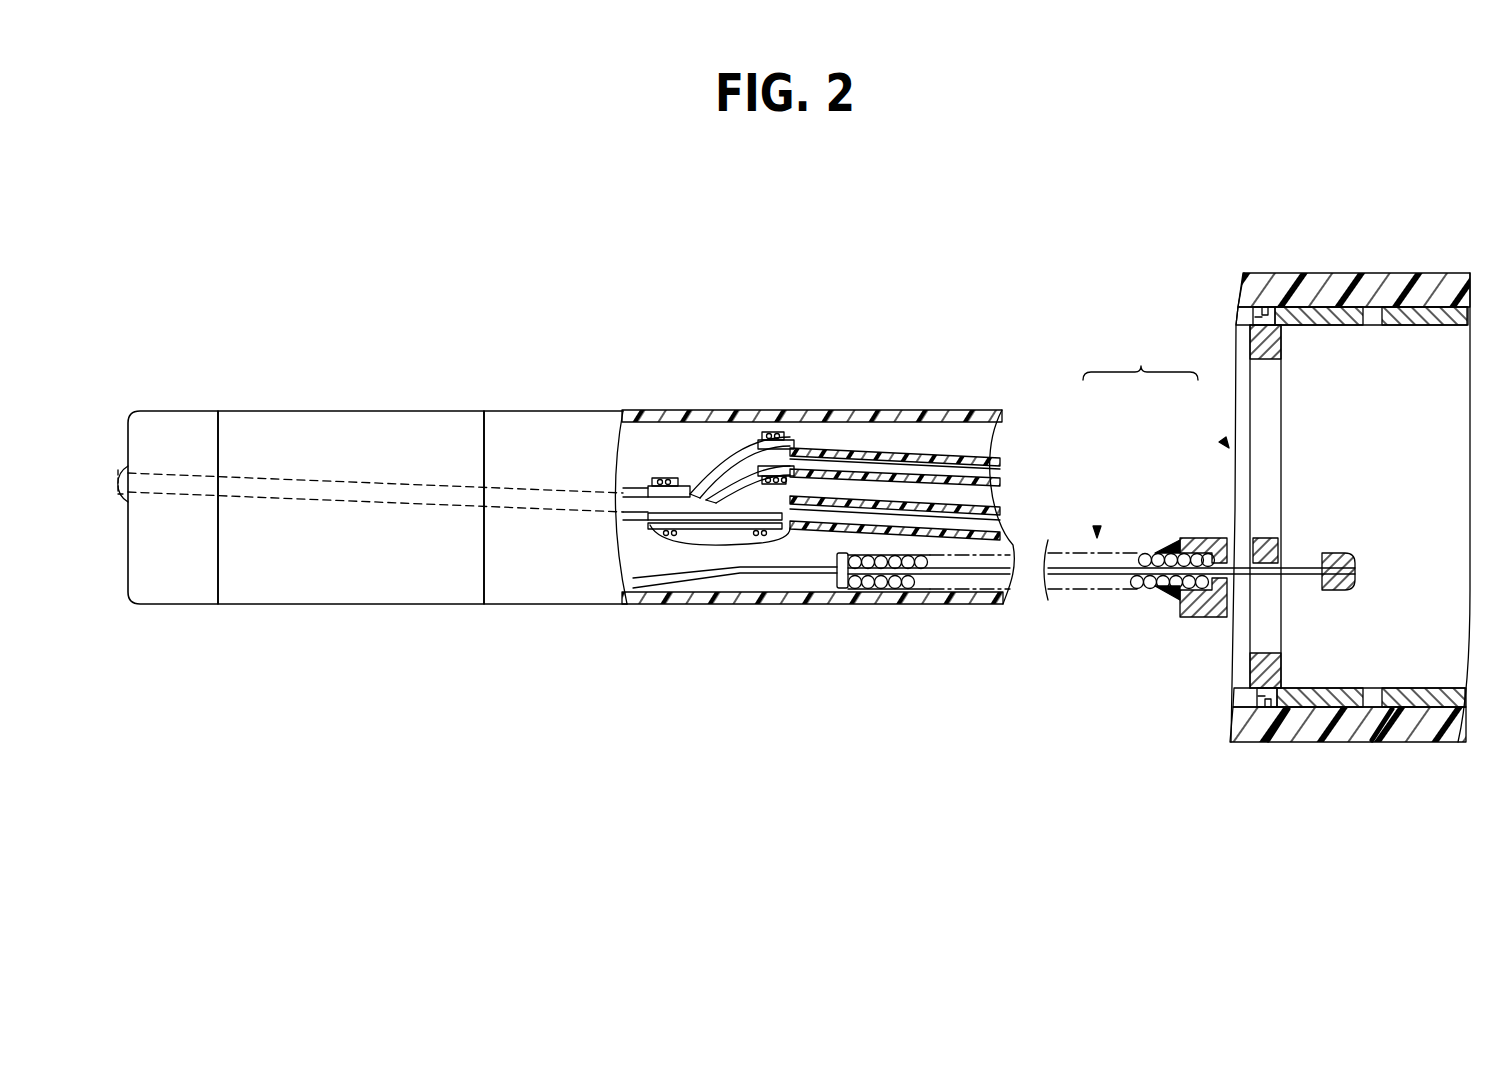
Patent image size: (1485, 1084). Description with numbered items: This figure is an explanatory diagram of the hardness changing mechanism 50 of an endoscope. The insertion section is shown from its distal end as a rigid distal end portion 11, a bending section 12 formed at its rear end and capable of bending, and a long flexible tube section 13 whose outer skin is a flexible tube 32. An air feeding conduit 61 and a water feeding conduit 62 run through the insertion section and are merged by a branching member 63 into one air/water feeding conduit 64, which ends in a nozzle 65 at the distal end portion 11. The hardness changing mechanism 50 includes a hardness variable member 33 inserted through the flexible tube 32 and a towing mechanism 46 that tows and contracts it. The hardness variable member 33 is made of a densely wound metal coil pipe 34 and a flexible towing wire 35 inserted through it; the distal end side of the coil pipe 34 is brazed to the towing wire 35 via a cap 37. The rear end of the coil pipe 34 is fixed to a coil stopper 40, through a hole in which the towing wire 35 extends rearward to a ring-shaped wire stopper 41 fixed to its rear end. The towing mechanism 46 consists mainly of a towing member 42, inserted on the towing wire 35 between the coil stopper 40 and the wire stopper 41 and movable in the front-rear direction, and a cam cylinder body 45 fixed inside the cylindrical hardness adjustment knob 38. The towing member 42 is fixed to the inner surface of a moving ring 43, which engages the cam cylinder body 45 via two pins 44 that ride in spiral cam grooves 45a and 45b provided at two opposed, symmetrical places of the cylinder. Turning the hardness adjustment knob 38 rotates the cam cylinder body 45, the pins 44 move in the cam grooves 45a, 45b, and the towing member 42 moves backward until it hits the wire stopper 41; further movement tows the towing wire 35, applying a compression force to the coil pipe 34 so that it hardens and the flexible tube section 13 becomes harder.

The distal end portion 11 is at (178, 411).
The bending section 12 is at (325, 411).
The flexible tube section 13 is at (530, 411).
The nozzle 65 is at (118, 462).
The air/water feeding conduit 64 is at (428, 487).
The flexible tube 32 is at (876, 410).
The water feeding conduit 62 is at (985, 470).
The air feeding conduit 61 is at (993, 520).
The branching member 63 is at (686, 476).
The cap 37 is at (833, 592).
The hardness variable member 33 is at (1097, 530).
The towing wire 35 is at (1089, 578).
The hardness changing mechanism 50 is at (1140, 359).
The towing mechanism 46 is at (1226, 443).
The coil pipe 34 is at (1152, 548).
The coil stopper 40 is at (1212, 538).
The towing member 42 is at (1272, 540).
The moving ring 43 is at (1251, 672).
The wire stopper 41 is at (1338, 555).
The hardness adjustment knob 38 is at (1365, 273).
The pins 44 is at (1252, 317).
The cam cylinder body 45 is at (1403, 690).
The cam groove 45a is at (1276, 712).
The cam groove 45b is at (1378, 712).